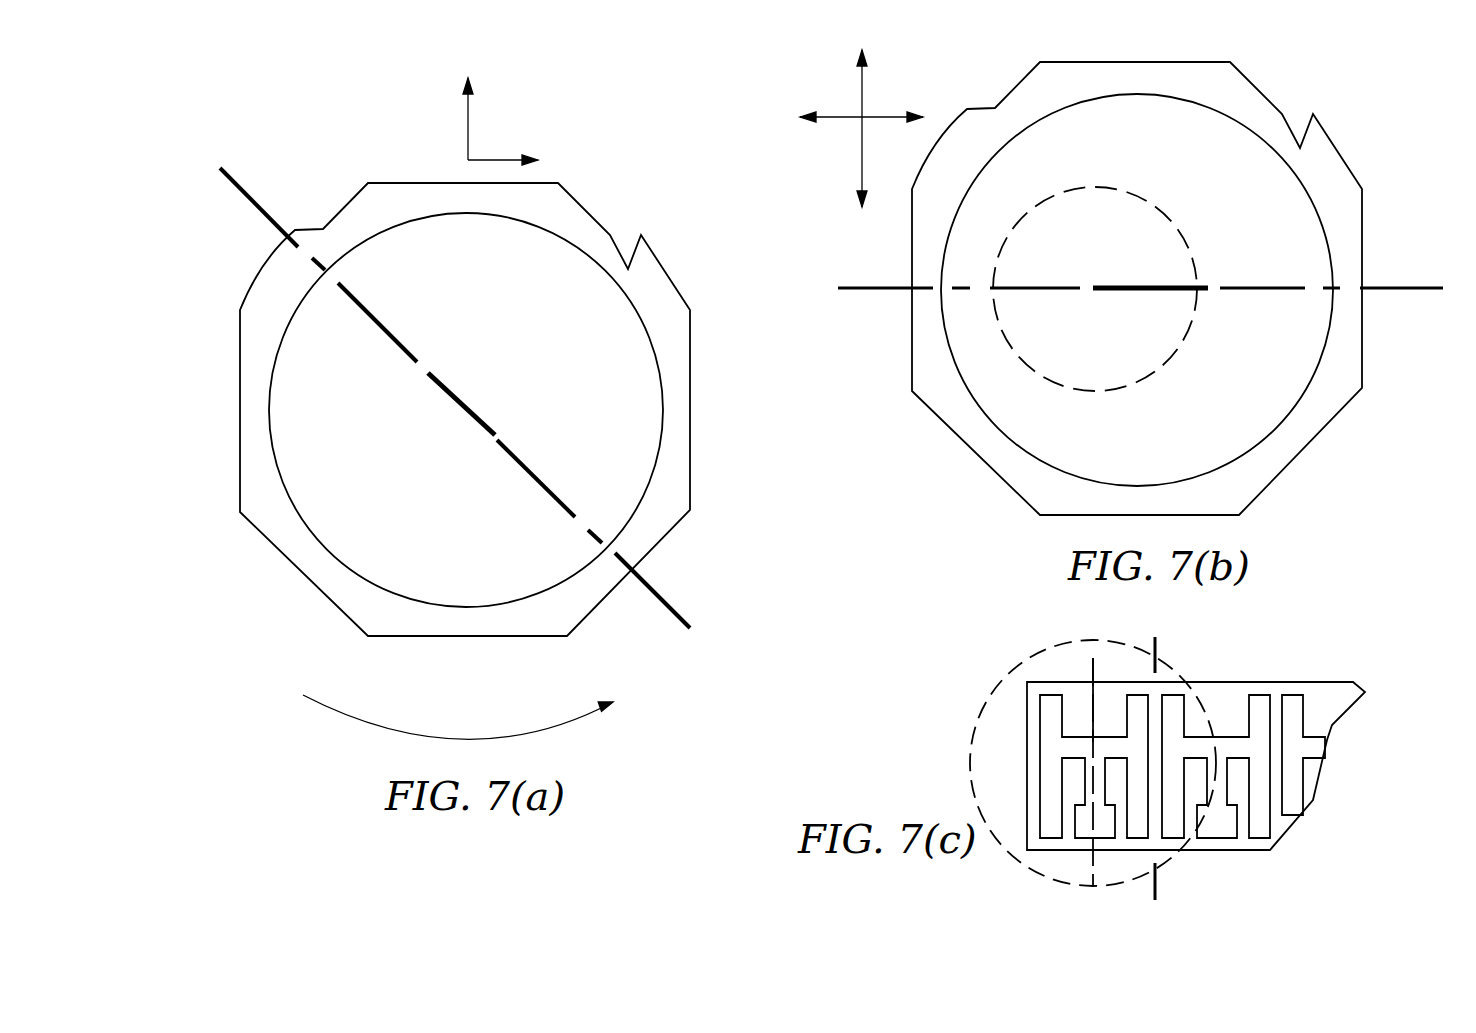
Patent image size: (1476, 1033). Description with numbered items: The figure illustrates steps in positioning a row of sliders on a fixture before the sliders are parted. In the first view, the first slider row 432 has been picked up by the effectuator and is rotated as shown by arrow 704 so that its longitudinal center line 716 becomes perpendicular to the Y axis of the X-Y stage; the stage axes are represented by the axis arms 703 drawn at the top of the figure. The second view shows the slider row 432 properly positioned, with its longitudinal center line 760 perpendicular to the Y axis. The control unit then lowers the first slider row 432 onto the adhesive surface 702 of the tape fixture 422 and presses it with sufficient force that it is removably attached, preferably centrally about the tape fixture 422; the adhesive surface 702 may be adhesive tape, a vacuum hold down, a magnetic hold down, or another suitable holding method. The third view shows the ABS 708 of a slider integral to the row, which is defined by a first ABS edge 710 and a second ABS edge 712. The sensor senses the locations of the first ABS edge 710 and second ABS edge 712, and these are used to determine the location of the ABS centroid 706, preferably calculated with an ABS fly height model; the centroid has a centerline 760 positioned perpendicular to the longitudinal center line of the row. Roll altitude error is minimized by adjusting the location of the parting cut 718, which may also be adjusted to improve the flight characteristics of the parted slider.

In FIG. 7A, the tape fixture 422 is at (288, 583).
In FIG. 7B, the tape fixture 422 is at (1068, 515).
In FIG. 7A, the adhesive surface 702 is at (628, 343).
In FIG. 7B, the adhesive surface 702 is at (1302, 222).
In FIG. 7A, the axis arms 703 is at (523, 110).
In FIG. 7B, the axis arms 703 is at (890, 78).
In FIG. 7A, the arrow 704 is at (390, 728).
In FIG. 7A, the longitudinal center line 716 is at (667, 597).
In FIG. 7A, the first slider row 432 is at (463, 410).
In FIG. 7B, the first slider row 432 is at (1140, 292).
In FIG. 7B, the longitudinal center line 760 is at (1398, 290).
In FIG. 7C, the longitudinal center line 760 is at (1093, 863).
In FIG. 7C, the second ABS edge 712 is at (1148, 730).
In FIG. 7C, the ABS centroid 706 is at (1073, 773).
In FIG. 7C, the first ABS edge 710 is at (1042, 738).
In FIG. 7C, the ABS 708 is at (1107, 712).
In FIG. 7C, the parting cut 718 is at (1157, 655).